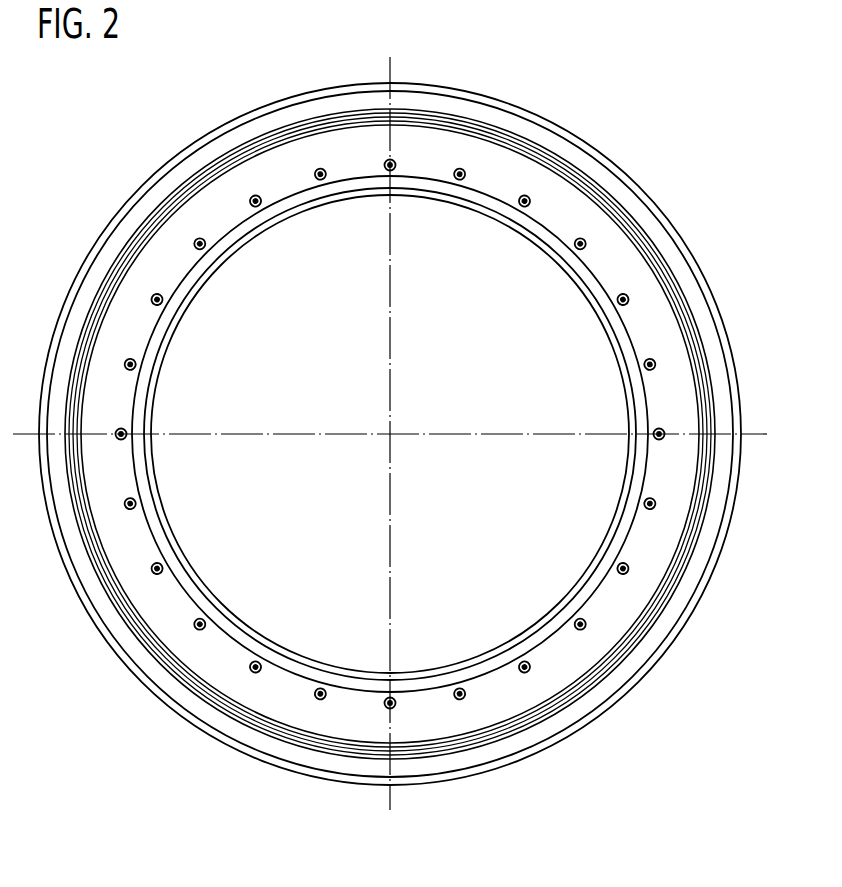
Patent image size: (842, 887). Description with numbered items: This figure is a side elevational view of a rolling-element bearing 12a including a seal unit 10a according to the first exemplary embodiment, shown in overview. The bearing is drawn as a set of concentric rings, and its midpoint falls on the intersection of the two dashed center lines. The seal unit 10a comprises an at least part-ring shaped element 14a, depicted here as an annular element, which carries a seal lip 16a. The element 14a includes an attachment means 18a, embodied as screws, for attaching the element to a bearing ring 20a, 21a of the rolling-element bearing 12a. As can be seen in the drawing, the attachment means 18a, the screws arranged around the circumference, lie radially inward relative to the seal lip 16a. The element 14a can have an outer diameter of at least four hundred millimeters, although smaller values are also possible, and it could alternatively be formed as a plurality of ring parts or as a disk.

The seal unit 10a is at (235, 210).
The rolling-element bearing 12a is at (652, 102).
The at least part-ring shaped element 14a is at (338, 147).
The seal lip 16a is at (695, 547).
The attachment means 18a is at (275, 668).
The bearing ring 20a is at (670, 220).
The bearing ring 21a is at (578, 288).